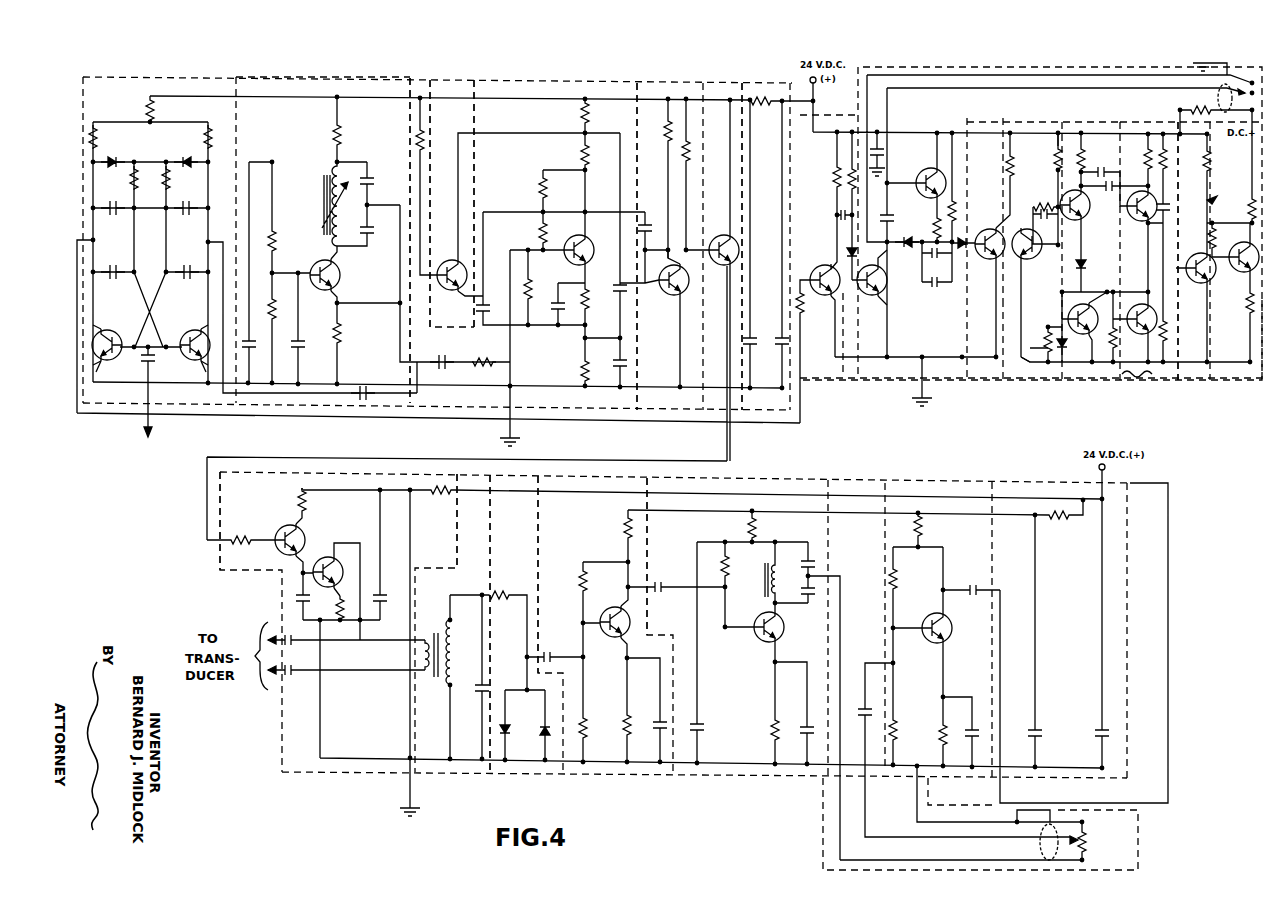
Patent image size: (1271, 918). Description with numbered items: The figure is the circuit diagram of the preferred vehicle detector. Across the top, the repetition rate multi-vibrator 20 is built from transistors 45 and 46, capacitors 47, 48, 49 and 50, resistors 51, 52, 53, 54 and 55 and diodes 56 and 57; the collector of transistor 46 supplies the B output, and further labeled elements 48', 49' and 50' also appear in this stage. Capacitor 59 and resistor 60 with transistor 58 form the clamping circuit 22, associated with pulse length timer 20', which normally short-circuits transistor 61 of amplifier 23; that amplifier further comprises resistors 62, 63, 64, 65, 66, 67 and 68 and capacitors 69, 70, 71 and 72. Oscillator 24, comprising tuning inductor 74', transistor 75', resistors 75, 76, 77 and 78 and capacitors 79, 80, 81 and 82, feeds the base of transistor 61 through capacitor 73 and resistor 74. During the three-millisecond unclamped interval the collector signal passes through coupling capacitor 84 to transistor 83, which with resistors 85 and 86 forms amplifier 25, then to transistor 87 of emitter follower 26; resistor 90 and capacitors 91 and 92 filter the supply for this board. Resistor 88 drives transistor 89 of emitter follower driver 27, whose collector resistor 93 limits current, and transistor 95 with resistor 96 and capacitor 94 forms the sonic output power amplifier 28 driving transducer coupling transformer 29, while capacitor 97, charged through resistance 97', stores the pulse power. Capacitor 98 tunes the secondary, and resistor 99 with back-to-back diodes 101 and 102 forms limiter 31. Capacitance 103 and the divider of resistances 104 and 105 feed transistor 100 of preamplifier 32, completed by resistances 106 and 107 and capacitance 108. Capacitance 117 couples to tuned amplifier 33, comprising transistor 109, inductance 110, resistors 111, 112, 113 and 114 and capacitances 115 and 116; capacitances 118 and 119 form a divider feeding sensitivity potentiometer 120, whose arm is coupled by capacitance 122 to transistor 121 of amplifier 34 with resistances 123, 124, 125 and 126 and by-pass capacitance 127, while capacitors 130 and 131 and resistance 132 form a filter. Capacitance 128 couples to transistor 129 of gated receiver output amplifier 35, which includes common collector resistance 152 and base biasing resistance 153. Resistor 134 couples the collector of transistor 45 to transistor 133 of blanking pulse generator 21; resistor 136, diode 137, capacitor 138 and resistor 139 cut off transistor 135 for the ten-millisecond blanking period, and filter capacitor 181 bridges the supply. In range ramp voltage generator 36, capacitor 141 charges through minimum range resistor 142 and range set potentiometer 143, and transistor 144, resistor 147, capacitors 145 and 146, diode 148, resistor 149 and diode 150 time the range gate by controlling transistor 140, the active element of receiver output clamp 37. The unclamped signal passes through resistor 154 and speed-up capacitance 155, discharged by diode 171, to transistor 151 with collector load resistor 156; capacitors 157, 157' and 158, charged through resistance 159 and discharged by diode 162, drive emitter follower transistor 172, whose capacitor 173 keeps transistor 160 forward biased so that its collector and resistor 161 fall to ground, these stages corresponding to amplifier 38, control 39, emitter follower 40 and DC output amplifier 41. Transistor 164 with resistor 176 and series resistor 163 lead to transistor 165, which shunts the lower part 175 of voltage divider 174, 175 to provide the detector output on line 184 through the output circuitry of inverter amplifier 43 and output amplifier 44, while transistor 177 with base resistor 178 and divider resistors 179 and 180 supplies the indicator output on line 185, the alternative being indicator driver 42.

The repetition rate multi-vibrator 20 is at (123, 231).
The oscillator 24 is at (299, 84).
The pulse length timer 20' is at (418, 232).
The clamping circuit 22 is at (452, 85).
The amplifier 23 is at (550, 87).
The amplifier 25 is at (668, 87).
The emitter follower 26 is at (744, 87).
The resistor 55 is at (156, 108).
The resistor 53 is at (97, 135).
The resistor 54 is at (211, 136).
The diode 56 is at (114, 157).
The diode 57 is at (187, 158).
The resistor 52 is at (130, 178).
The resistor 51 is at (170, 180).
The capacitor 47 is at (112, 215).
The capacitor 49 is at (186, 220).
The capacitor 48 is at (113, 283).
The capacitor 50 is at (185, 283).
The transistor 45 is at (116, 357).
The transistor 46 is at (180, 358).
The emitter lead 48' is at (118, 381).
The emitter lead 49' is at (184, 381).
The synchronizing output capacitor 50' is at (129, 411).
The resistor 76 is at (334, 133).
The capacitor 79 is at (369, 172).
The capacitor 80 is at (369, 243).
The tuning inductor 74' is at (322, 204).
The resistor 78 is at (274, 236).
The resistor 77 is at (274, 310).
The capacitor 82 is at (245, 336).
The capacitor 81 is at (300, 338).
The transistor 75' is at (340, 274).
The resistor 75 is at (350, 343).
The capacitor 59 is at (364, 404).
The resistor 60 is at (417, 130).
The transistor 58 is at (450, 260).
The capacitor 72 is at (486, 298).
The capacitor 73 is at (443, 353).
The resistor 74 is at (494, 370).
The resistor 63 is at (582, 118).
The resistor 62 is at (582, 157).
The resistor 64 is at (540, 190).
The resistor 68 is at (540, 232).
The transistor 61 is at (573, 235).
The resistor 67 is at (532, 282).
The capacitor 71 is at (556, 308).
The resistor 66 is at (586, 300).
The resistor 65 is at (580, 372).
The capacitor 69 is at (623, 292).
The capacitor 70 is at (624, 360).
The coupling capacitor 84 is at (647, 216).
The transistor 83 is at (667, 305).
The resistor 86 is at (666, 155).
The resistor 85 is at (690, 156).
The transistor 87 is at (720, 268).
The resistor 90 is at (765, 112).
The capacitor 91 is at (742, 338).
The capacitor 92 is at (776, 332).
The receiver output blanking pulse generator 21 is at (830, 374).
The range ramp voltage generator 36 is at (860, 98).
The capacitor 181 is at (876, 130).
The resistor 136 is at (835, 165).
The resistor 139 is at (833, 178).
The capacitor 138 is at (836, 218).
The capacitor 141 is at (880, 212).
The transistor 133 is at (832, 254).
The resistor 134 is at (826, 300).
The transistor 135 is at (872, 300).
The diode 137 is at (856, 253).
The transistor 144 is at (931, 167).
The resistor 147 is at (934, 222).
The diode 150 is at (910, 250).
The capacitor 145 is at (935, 262).
The capacitor 146 is at (935, 290).
The resistor 149 is at (956, 198).
The diode 148 is at (975, 232).
The transistor 140 is at (990, 230).
The common collector resistance 152 is at (1006, 160).
The transistor 129 is at (1018, 262).
The receiver output clamp 37 is at (988, 120).
The gated receiver output amplifier 35 is at (1033, 122).
The base biasing resistance 153 is at (1054, 158).
The resistor 154 is at (1040, 202).
The capacitance 155 is at (1046, 218).
The collector load resistor 156 is at (1061, 133).
The capacitor 157 is at (1095, 161).
The capacitor 157' is at (1112, 180).
The capacitor 158 is at (1114, 190).
The transistor 151 is at (1073, 222).
The diode 171 is at (1090, 266).
The transistor 172 is at (1140, 222).
The resistor 161 is at (1154, 156).
The resistor 180 is at (1166, 166).
The capacitor 173 is at (1167, 210).
The transistor 177 is at (1095, 300).
The base current limiting resistor 178 is at (1117, 344).
The resistor 179 is at (1167, 338).
The transistor 160 is at (1055, 357).
The diode 162 is at (1062, 362).
The resistance 159 is at (1030, 348).
The DC output amplifier 41 is at (1107, 380).
The indicator driver 42 is at (1128, 382).
The series resistor 163 is at (1143, 385).
The detector output inverter amplifier 43 is at (1196, 380).
The detector output amplifier 44 is at (1248, 380).
The transistor 164 is at (1199, 285).
The line 185 is at (1232, 170).
The detector output line 184 is at (1217, 198).
The resistor 176 is at (1215, 232).
The voltage divider resistor 174 is at (1250, 208).
The transistor 165 is at (1242, 275).
The voltage divider resistor 175 is at (1247, 310).
The range set potentiometer 143 is at (1235, 80).
The minimum range resistor 142 is at (1190, 108).
The control 39 is at (1102, 122).
The emitter follower 40 is at (1140, 128).
The amplifier 38 is at (1020, 390).
The emitter follower driver 27 is at (263, 470).
The sonic output power amplifier 28 is at (365, 470).
The transducer coupling transformer 29 is at (446, 630).
The limiter 31 is at (533, 470).
The preamplifier 32 is at (603, 470).
The tuned amplifier 33 is at (791, 474).
The amplifier 34 is at (954, 485).
The resistor 88 is at (244, 537).
The transistor 89 is at (300, 530).
The resistor 93 is at (298, 500).
The transistor 95 is at (330, 556).
The resistor 96 is at (337, 606).
The capacitor 94 is at (297, 597).
The capacitor 97 is at (388, 555).
The resistance 97' is at (442, 497).
The resistor 99 is at (500, 592).
The capacitor 98 is at (486, 684).
The capacitance 103 is at (556, 652).
The diode 101 is at (504, 760).
The diode 102 is at (548, 760).
The resistance 104 is at (580, 578).
The resistance 105 is at (588, 722).
The resistance 107 is at (625, 526).
The transistor 100 is at (614, 612).
The resistance 106 is at (622, 730).
The capacitance 108 is at (662, 714).
The capacitance 117 is at (660, 580).
The capacitance 115 is at (696, 724).
The resistor 114 is at (727, 566).
The resistor 113 is at (757, 527).
The inductance 110 is at (770, 598).
The transistor 109 is at (760, 645).
The resistor 111 is at (770, 715).
The resistor 112 is at (770, 732).
The capacitance 116 is at (805, 726).
The capacitance 118 is at (812, 556).
The capacitance 119 is at (810, 595).
The resistance 125 is at (924, 528).
The resistance 124 is at (897, 578).
The transistor 121 is at (953, 630).
The capacitance 128 is at (978, 586).
The resistance 123 is at (897, 724).
The resistance 126 is at (938, 734).
The by-pass capacitance 127 is at (975, 720).
The input coupling capacitance 122 is at (863, 706).
The potentiometer 120 is at (862, 485).
The resistance 132 is at (1059, 527).
The capacitor 130 is at (1038, 726).
The capacitor 131 is at (1099, 726).